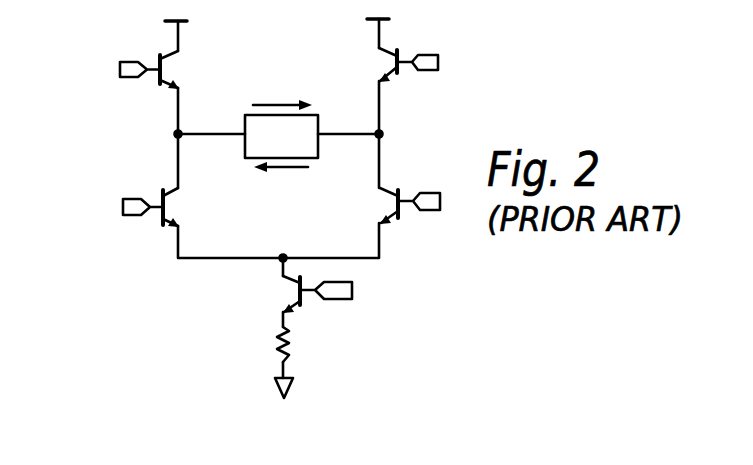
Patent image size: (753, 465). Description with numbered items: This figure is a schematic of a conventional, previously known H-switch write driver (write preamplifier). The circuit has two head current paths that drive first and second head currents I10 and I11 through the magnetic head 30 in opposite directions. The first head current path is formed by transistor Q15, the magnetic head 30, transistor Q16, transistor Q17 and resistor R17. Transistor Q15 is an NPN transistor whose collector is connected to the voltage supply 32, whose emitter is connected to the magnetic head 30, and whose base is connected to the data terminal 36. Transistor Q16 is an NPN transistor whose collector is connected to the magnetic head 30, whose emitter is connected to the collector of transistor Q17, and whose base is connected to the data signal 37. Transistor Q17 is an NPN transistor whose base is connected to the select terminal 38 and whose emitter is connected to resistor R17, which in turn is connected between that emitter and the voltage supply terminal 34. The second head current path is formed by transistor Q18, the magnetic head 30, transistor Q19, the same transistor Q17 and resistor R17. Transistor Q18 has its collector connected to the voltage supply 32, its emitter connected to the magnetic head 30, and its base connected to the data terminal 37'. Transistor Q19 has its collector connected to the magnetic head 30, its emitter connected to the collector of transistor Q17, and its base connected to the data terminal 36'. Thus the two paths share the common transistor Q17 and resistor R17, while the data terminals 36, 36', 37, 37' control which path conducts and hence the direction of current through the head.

The magnetic head 30 is at (318, 147).
The voltage supply 32 is at (178, 21).
The voltage supply terminal 34 is at (277, 388).
The data terminal 36 is at (120, 49).
The data terminal 36' is at (118, 183).
The data terminal 37 is at (429, 229).
The data terminal 37' is at (452, 70).
The select terminal 38 is at (352, 290).
The transistor Q15 is at (197, 72).
The transistor Q16 is at (372, 208).
The transistor Q17 is at (275, 297).
The transistor Q18 is at (371, 66).
The transistor Q19 is at (200, 210).
The resistor R17 is at (312, 349).
The first head current I10 is at (282, 89).
The second head current I11 is at (284, 183).